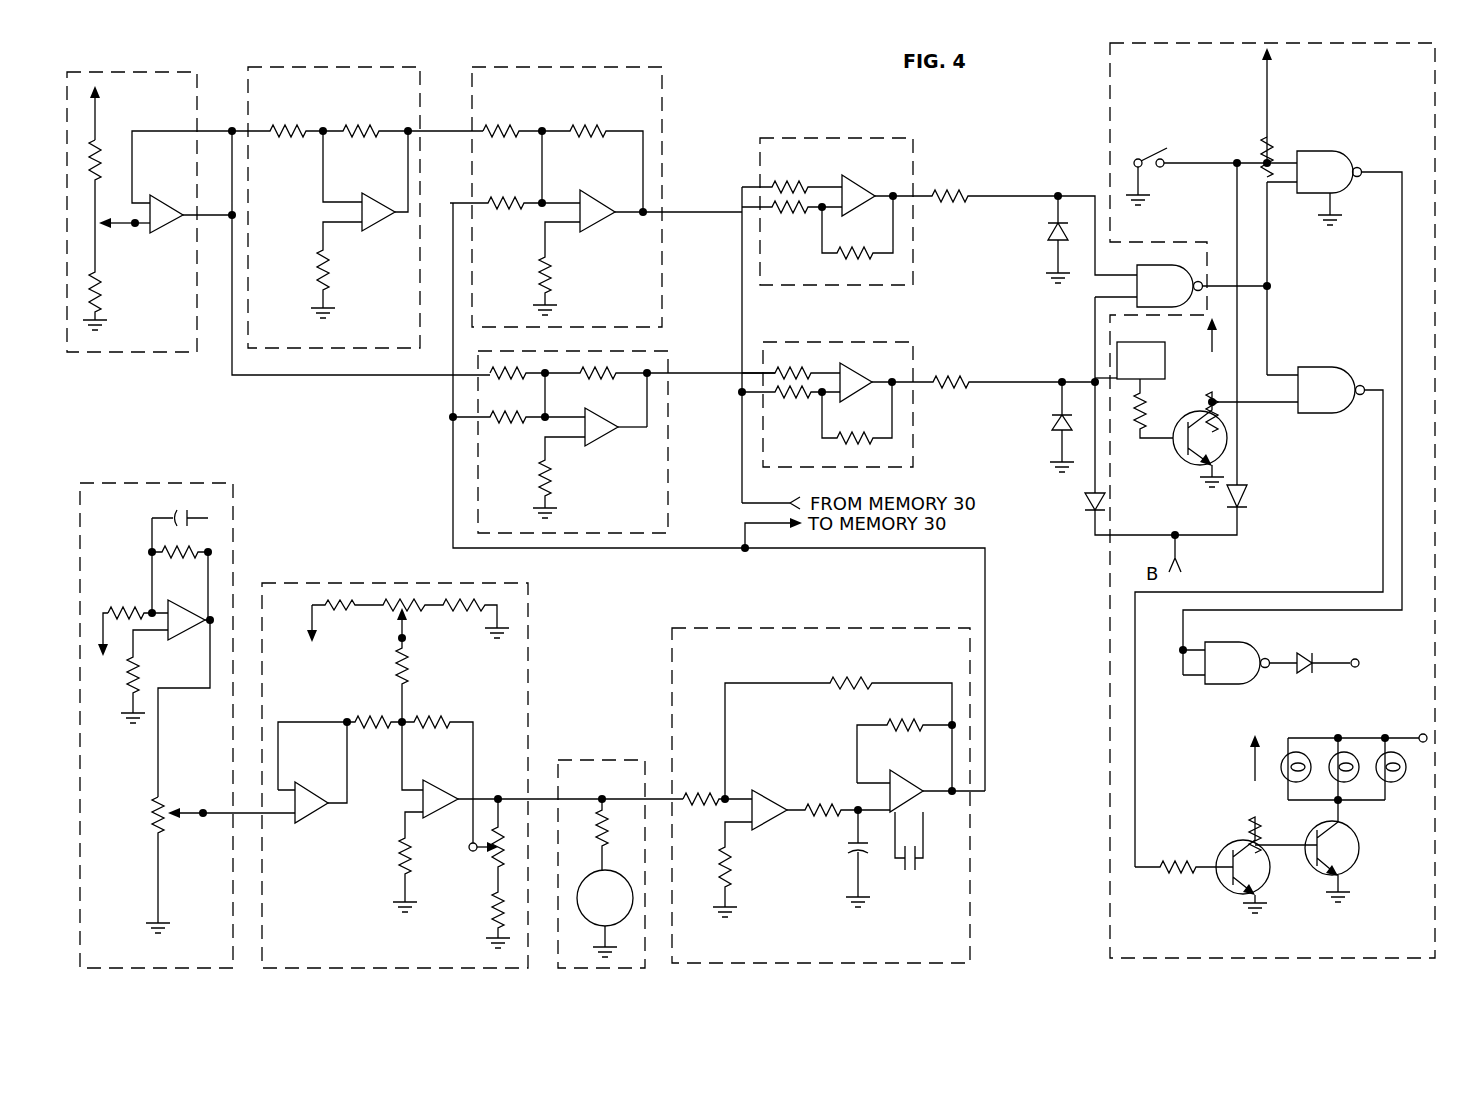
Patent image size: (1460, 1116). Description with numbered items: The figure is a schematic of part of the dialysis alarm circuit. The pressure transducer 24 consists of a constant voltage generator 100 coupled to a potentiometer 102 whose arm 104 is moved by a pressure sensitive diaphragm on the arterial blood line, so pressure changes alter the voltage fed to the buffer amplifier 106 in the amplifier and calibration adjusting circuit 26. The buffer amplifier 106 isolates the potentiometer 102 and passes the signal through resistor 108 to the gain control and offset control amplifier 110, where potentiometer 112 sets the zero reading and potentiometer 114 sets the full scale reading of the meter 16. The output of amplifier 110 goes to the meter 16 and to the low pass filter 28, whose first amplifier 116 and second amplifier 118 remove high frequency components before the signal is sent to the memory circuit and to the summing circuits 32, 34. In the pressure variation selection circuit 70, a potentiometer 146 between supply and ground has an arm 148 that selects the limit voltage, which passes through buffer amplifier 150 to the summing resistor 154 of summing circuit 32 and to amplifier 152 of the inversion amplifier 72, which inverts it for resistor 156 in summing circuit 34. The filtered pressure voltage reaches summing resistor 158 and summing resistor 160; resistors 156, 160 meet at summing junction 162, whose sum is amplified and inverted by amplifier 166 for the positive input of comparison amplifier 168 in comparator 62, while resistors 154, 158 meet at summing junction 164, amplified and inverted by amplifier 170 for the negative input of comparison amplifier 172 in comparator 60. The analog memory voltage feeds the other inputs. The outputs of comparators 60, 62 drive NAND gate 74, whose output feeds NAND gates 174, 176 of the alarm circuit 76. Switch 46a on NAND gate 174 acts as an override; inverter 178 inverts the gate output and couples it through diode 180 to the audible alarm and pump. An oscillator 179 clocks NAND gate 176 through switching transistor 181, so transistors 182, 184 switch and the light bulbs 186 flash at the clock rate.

The meter 16 is at (566, 758).
The pressure transducer 24 is at (122, 481).
The amplifier and calibration adjusting circuit 26 is at (300, 583).
The low pass filter 28 is at (745, 628).
The summing circuit 32 is at (668, 498).
The summing circuit 34 is at (663, 108).
The switch 46a is at (1157, 152).
The comparator 60 is at (848, 341).
The comparator 62 is at (915, 148).
The pressure variation selection circuit 70 is at (118, 354).
The inversion amplifier 72 is at (322, 350).
The NAND gate 74 is at (1160, 264).
The alarm circuit 76 is at (1100, 68).
The constant voltage generator 100 is at (185, 628).
The potentiometer 102 is at (158, 800).
The arm 104 is at (196, 825).
The buffer amplifier 106 is at (310, 818).
The resistor 108 is at (376, 736).
The gain control and offset control amplifier 110 is at (445, 815).
The potentiometer 112 is at (408, 617).
The potentiometer 114 is at (500, 853).
The first amplifier 116 is at (767, 792).
The second amplifier 118 is at (904, 758).
The potentiometer 146 is at (103, 242).
The arm 148 is at (118, 228).
The buffer amplifier 150 is at (162, 193).
The amplifier 152 is at (385, 225).
The summing resistor 154 is at (520, 373).
The resistor 156 is at (500, 128).
The summing resistor 158 is at (520, 423).
The summing resistor 160 is at (506, 209).
The summing junction 162 is at (545, 172).
The summing junction 164 is at (548, 400).
The amplifier 166 is at (598, 232).
The comparison amplifier 168 is at (858, 178).
The amplifier 170 is at (603, 447).
The comparison amplifier 172 is at (864, 353).
The NAND gate 174 is at (1322, 150).
The NAND gate 176 is at (1322, 366).
The inverter 178 is at (1222, 641).
The oscillator 179 is at (1128, 342).
The diode 180 is at (1300, 651).
The switching transistor 181 is at (1165, 455).
The transistor 182 is at (1268, 873).
The transistor 184 is at (1362, 845).
The light bulbs 186 is at (1405, 778).